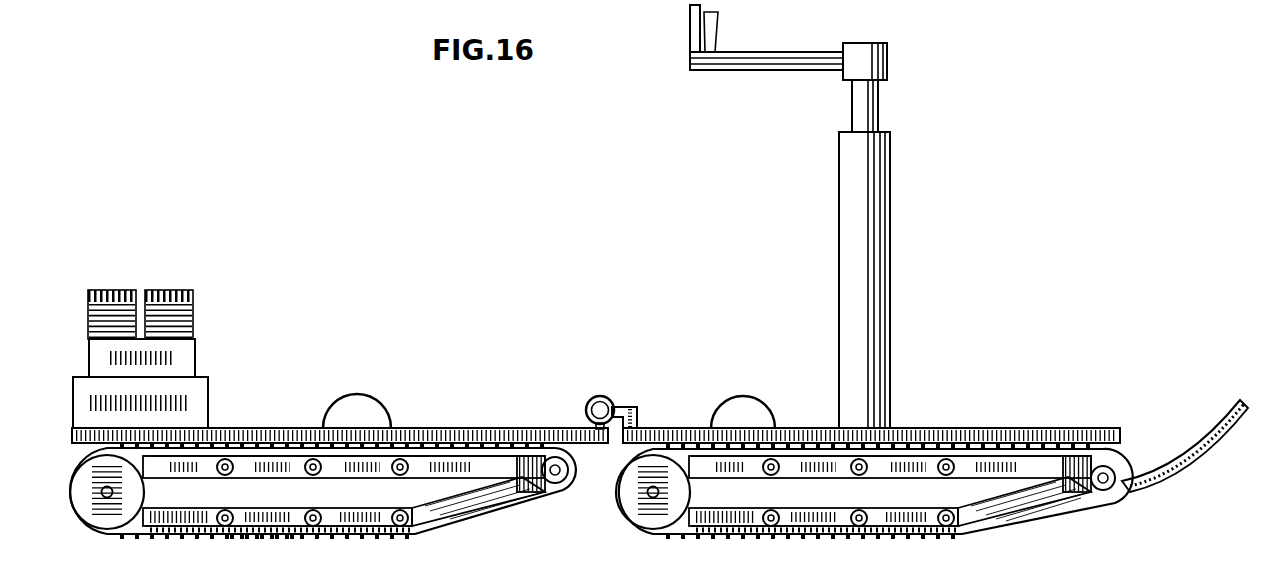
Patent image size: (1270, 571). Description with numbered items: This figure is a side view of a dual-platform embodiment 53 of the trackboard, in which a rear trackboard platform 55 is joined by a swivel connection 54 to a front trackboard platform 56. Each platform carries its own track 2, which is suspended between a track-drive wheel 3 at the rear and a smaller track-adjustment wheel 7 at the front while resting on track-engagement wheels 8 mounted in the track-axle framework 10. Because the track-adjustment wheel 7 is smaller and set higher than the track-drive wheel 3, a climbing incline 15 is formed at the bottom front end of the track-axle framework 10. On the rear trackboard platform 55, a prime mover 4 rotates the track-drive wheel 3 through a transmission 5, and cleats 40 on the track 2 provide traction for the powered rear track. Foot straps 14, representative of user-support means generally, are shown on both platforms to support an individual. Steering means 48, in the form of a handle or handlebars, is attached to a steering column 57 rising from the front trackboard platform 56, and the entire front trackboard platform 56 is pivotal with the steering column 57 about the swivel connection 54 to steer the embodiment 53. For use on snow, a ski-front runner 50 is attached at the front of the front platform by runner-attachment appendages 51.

The dual-platform embodiment 53 is at (246, 158).
The steering means 48 is at (767, 66).
The steering column 57 is at (845, 312).
The prime mover 4 is at (193, 314).
The transmission 5 is at (198, 396).
The foot straps 14 is at (357, 394).
The rear trackboard platform 55 is at (433, 436).
The swivel connection 54 is at (594, 398).
The front trackboard platform 56 is at (975, 437).
The runner-attachment appendages 51 is at (1090, 430).
The ski-front runner 50 is at (1212, 430).
The track-drive wheel 3 is at (108, 522).
The track 2 is at (152, 531).
The track-axle framework 10 is at (192, 514).
The cleats 40 is at (265, 534).
The track-engagement wheels 8 is at (307, 526).
The climbing incline 15 is at (487, 511).
The track-adjustment wheel 7 is at (563, 489).